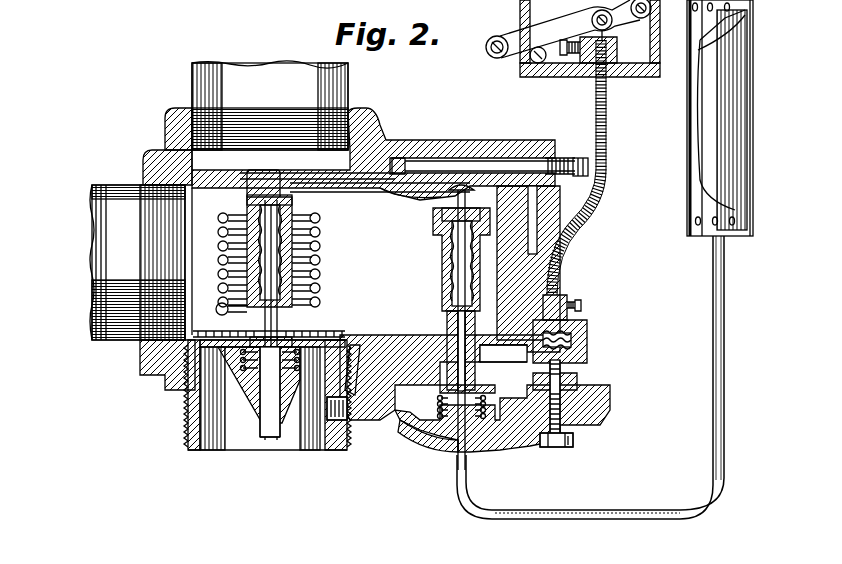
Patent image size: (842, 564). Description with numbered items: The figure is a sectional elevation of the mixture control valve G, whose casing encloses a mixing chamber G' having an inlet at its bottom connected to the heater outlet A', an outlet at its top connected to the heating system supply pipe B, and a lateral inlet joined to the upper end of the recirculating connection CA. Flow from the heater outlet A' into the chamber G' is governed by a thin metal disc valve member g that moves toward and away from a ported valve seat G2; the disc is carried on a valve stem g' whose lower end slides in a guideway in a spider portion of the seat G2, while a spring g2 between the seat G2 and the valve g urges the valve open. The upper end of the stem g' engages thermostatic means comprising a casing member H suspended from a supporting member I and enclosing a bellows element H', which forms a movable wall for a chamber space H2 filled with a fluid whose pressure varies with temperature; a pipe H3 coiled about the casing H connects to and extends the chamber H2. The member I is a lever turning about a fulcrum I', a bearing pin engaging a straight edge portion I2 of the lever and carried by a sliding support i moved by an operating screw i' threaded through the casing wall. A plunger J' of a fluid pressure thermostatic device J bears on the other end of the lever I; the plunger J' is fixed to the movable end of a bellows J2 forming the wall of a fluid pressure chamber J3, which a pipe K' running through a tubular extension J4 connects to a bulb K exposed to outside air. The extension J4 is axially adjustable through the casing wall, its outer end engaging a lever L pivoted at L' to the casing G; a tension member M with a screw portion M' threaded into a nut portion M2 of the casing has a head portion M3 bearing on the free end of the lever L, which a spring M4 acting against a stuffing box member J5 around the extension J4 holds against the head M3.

The recirculating connection CA is at (100, 278).
The heating system supply pipe B is at (271, 78).
The mixture control valve G is at (350, 256).
The mixing chamber G' is at (198, 261).
The ported valve seat G2 is at (346, 335).
The casing member H is at (254, 238).
The bellows element H' is at (240, 203).
The chamber space H2 is at (283, 207).
The coiled pipe H3 is at (303, 252).
The supporting member I is at (380, 205).
The fulcrum I' is at (410, 209).
The straight edge portion I2 is at (373, 168).
The support i is at (489, 137).
The operating screw i' is at (573, 147).
The thermostatic device J is at (440, 259).
The plunger J' is at (437, 228).
The bellows element J2 is at (440, 263).
The fluid pressure chamber J3 is at (455, 312).
The tubular extension J4 is at (475, 330).
The stuffing box member J5 is at (495, 389).
The valve member g is at (304, 327).
The valve stem g' is at (312, 320).
The spring g2 is at (235, 400).
The heater outlet A' is at (267, 410).
The lever L is at (502, 429).
The pivot connection L' is at (367, 407).
The tension member M is at (560, 391).
The screw portion M' is at (583, 400).
The nut portion M2 is at (578, 383).
The head portion M3 is at (574, 441).
The spring M4 is at (423, 436).
The bulb K is at (699, 118).
The pipe K' is at (590, 377).